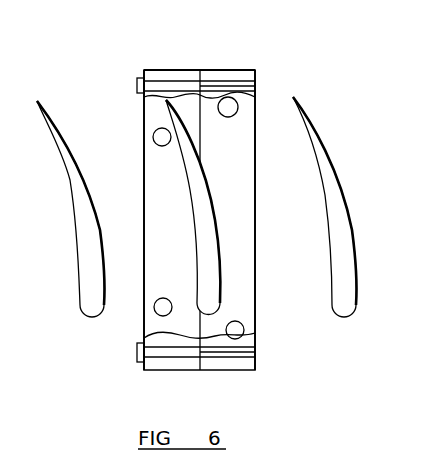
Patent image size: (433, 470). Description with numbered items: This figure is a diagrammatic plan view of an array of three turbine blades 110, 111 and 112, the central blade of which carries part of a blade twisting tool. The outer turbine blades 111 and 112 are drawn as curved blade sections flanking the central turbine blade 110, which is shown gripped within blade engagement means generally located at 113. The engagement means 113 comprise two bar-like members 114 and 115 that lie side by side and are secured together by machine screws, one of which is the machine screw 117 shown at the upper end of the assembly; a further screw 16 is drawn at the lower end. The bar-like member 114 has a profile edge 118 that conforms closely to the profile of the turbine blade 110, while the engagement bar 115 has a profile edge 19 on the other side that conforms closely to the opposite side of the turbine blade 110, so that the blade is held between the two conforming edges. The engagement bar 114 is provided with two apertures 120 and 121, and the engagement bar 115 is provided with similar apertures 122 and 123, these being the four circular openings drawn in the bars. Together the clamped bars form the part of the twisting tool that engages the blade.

The turbine blade 110 is at (253, 327).
The turbine blade 111 is at (78, 308).
The turbine blade 112 is at (336, 312).
The blade engagement means 113 is at (213, 70).
The bar-like member 114 is at (256, 272).
The bar-like member 115 is at (144, 165).
The machine screw 117 is at (136, 83).
The profile edge 118 is at (216, 197).
The central blade 19 is at (200, 228).
The aperture 120 is at (238, 113).
The aperture 121 is at (243, 336).
The aperture 122 is at (154, 307).
The aperture 123 is at (153, 136).
The lower fastening bolt 16 is at (137, 361).